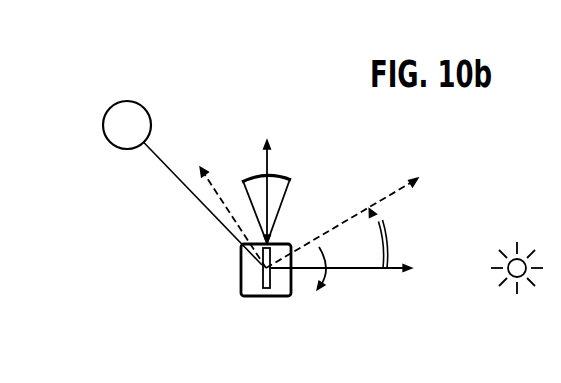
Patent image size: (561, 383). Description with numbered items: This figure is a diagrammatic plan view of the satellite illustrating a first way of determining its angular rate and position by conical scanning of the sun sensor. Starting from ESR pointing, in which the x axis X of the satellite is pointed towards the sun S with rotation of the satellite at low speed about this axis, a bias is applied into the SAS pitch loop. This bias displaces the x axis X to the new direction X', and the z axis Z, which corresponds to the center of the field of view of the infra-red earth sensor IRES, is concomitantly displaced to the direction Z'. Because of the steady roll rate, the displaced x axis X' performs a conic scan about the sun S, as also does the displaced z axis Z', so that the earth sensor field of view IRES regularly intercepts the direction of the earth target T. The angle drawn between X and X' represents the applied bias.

The target (earth) object T is at (127, 111).
The z axis Z is at (266, 179).
The displaced z-axis Z' is at (225, 205).
The infra-red earth sensor IRES is at (291, 207).
The displaced x-axis X' is at (348, 208).
The x axis X is at (343, 255).
The sun S is at (517, 256).